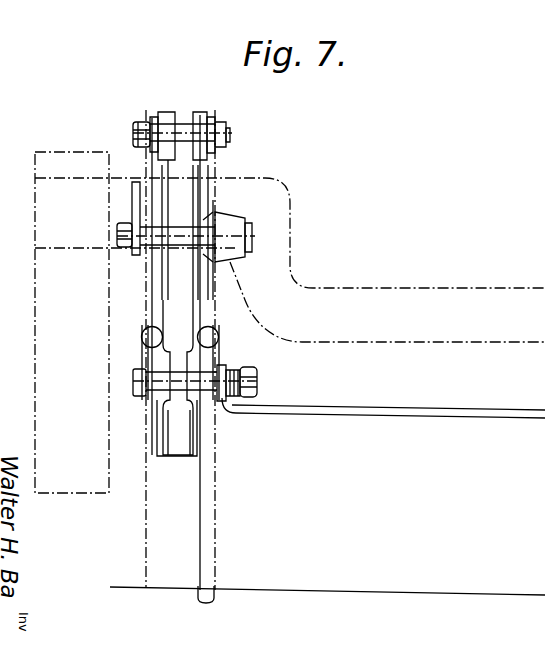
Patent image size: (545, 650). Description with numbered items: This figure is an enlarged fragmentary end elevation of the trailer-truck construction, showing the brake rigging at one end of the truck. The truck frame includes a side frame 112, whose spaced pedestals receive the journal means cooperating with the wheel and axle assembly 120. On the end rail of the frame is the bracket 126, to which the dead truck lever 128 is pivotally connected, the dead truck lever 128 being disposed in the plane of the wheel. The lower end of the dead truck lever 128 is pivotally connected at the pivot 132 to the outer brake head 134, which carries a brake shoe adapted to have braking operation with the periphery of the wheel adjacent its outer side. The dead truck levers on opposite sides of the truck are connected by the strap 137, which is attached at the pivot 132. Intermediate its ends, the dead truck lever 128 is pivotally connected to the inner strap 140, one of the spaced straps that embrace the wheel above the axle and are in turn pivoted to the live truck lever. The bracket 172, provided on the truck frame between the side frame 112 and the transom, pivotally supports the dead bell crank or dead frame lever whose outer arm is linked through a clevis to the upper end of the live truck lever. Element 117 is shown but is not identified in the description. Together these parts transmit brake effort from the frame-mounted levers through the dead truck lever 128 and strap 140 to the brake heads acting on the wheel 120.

The side frame 112 is at (45, 187).
The housing casing outline 117 is at (386, 291).
The wheel and axle assembly 120 is at (190, 545).
The bracket 126 is at (172, 112).
The dead truck lever 128 is at (150, 286).
The pivot 132 is at (257, 382).
The outer brake head 134 is at (173, 433).
The strap 137 is at (352, 414).
The inner strap 140 is at (240, 214).
The bracket 172 is at (133, 182).